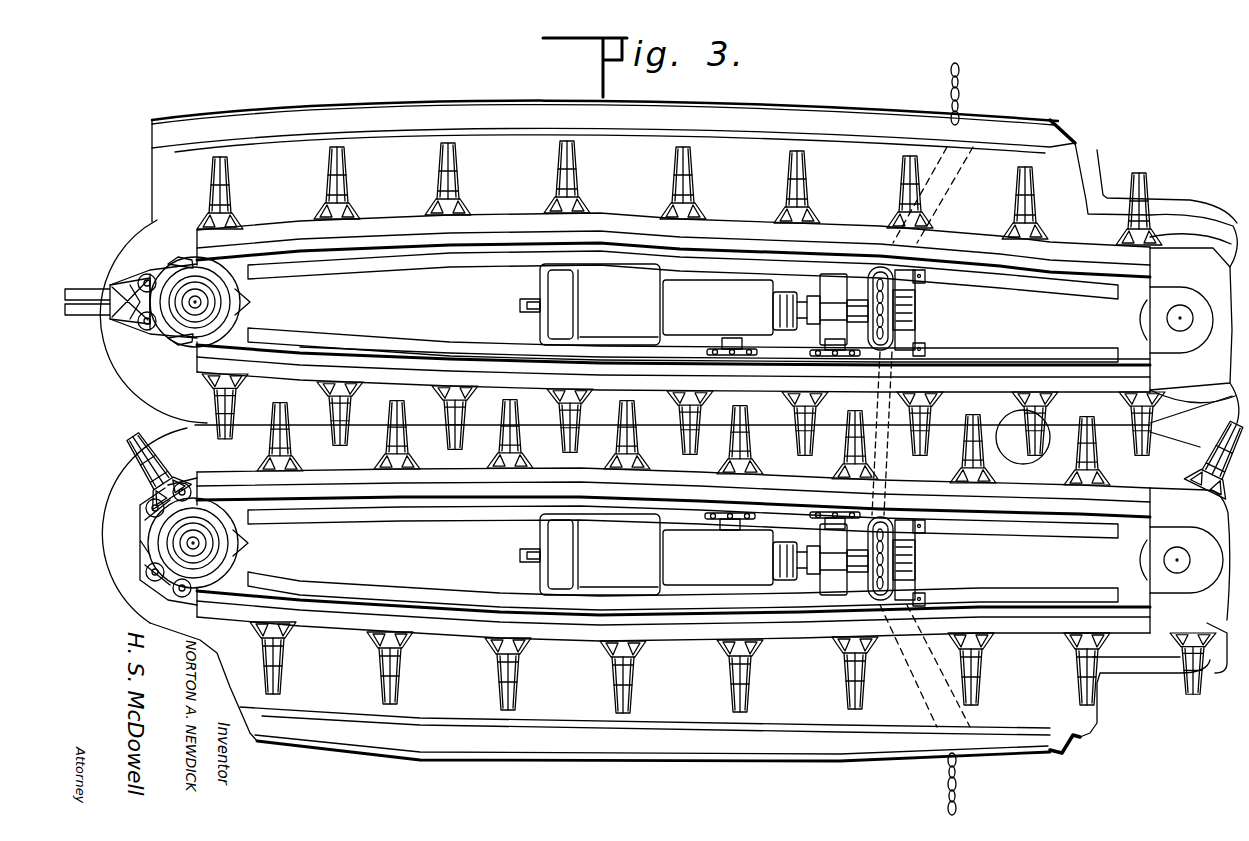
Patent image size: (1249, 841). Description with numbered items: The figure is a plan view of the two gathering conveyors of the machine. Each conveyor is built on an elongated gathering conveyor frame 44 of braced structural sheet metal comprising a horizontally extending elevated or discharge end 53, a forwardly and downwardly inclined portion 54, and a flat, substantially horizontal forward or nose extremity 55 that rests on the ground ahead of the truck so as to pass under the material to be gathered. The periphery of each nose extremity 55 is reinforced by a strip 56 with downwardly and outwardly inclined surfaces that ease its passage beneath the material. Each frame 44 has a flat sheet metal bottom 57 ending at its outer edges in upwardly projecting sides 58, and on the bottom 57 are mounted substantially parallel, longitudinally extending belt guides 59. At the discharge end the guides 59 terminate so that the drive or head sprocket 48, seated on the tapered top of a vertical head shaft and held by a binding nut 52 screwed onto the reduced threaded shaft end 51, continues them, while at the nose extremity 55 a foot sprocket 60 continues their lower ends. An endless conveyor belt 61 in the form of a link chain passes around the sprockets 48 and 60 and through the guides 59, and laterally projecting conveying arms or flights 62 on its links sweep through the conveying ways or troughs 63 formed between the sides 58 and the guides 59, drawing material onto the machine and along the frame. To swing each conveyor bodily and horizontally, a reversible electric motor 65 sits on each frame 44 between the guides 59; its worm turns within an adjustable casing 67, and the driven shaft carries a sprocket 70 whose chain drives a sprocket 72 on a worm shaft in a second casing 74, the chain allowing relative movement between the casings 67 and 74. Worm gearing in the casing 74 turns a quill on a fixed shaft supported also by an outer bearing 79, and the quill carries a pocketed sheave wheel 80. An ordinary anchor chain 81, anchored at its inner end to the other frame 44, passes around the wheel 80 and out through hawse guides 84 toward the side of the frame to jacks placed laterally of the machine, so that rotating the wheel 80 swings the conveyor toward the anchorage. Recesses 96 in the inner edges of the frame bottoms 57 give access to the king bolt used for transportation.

The gathering conveyor frame 44 is at (755, 152).
The drive or head sprocket 48 is at (250, 304).
The reduced threaded end of head shaft 51 is at (182, 347).
The binding nut 52 is at (215, 310).
The elevated or discharge end 53 is at (250, 665).
The forwardly and downwardly inclined portion 54 is at (643, 677).
The forward or nose extremity 55 is at (1163, 437).
The reinforcing strip 56 is at (1177, 210).
The sheet metal bottom 57 is at (683, 462).
The upwardly projecting side 58 is at (1038, 135).
The belt guide 59 is at (988, 252).
The foot sprocket 60 is at (1143, 318).
The endless conveyor belt 61 is at (150, 342).
The conveying arm or flight 62 is at (1142, 178).
The material conveying way or trough 63 is at (500, 422).
The reversible electric motor 65 is at (590, 429).
The adjustable casing 67 is at (735, 432).
The sprocket 70 is at (733, 338).
The sprocket 72 is at (812, 366).
The second casing 74 is at (833, 274).
The outer bearing 79 is at (912, 282).
The pocketed sheave wheel 80 is at (915, 301).
The anchor chain 81 is at (900, 262).
The hawse guide 84 is at (870, 605).
The recess 96 is at (1025, 410).